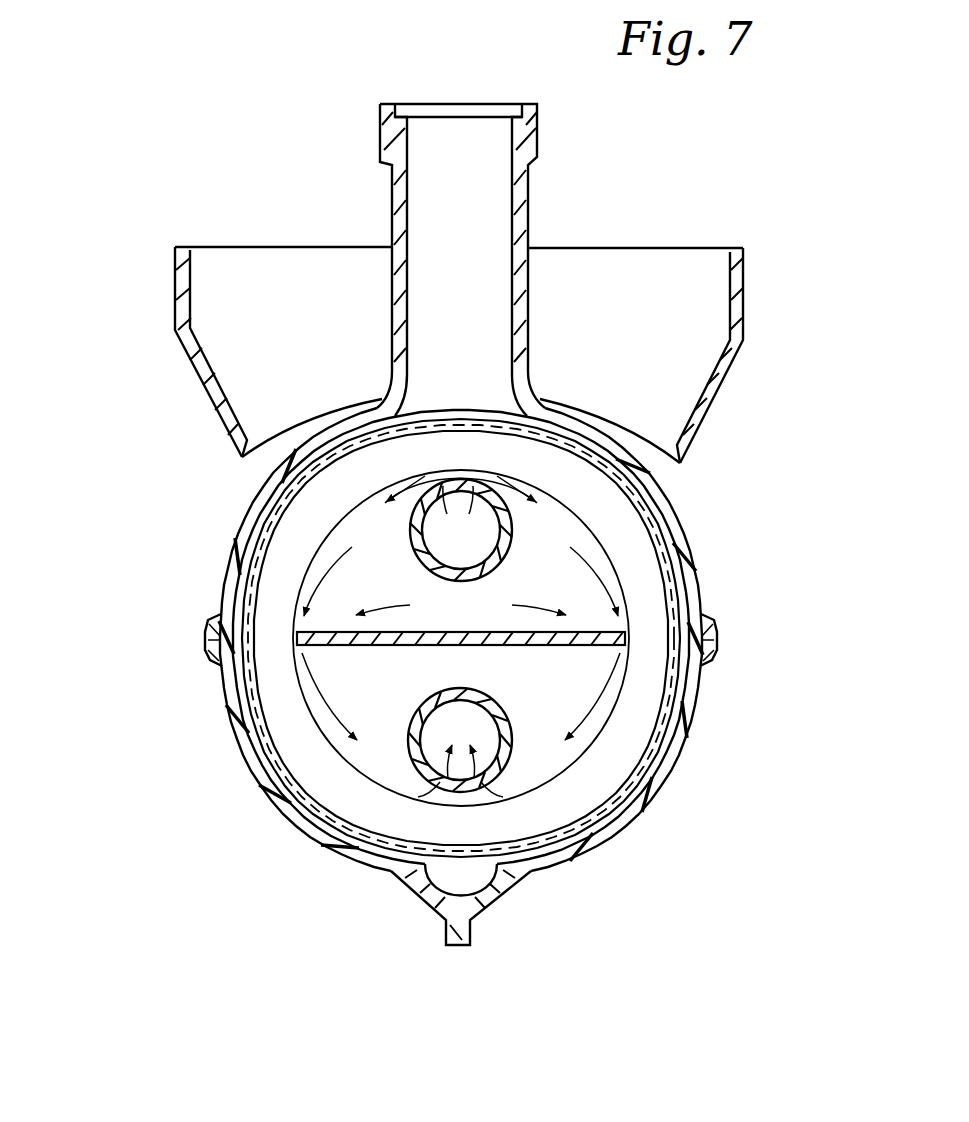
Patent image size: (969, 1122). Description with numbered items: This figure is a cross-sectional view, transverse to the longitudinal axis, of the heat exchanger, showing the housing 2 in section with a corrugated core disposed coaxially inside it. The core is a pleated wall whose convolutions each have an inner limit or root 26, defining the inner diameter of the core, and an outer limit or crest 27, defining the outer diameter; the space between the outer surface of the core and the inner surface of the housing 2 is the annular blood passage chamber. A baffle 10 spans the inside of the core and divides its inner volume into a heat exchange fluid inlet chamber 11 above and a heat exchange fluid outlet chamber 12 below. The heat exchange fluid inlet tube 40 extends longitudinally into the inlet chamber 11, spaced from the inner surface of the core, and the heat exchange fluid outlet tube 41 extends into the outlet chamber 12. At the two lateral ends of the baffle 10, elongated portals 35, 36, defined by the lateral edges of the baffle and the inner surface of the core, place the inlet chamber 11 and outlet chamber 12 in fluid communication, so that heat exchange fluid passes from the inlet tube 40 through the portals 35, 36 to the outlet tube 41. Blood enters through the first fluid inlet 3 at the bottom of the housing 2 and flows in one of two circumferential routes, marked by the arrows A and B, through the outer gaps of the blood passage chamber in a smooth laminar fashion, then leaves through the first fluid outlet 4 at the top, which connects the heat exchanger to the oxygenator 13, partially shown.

The housing 2 is at (218, 688).
The first fluid inlet 3 is at (416, 890).
The first fluid outlet 4 is at (380, 136).
The baffle 10 is at (521, 646).
The inlet chamber 11 is at (471, 618).
The outlet chamber 12 is at (471, 680).
The oxygenator 13 is at (172, 280).
The root 26 is at (603, 543).
The crest 27 is at (668, 565).
The elongated portal 35 is at (297, 637).
The elongated portal 36 is at (626, 633).
The heat exchange fluid inlet tube 40 is at (413, 547).
The heat exchange fluid outlet tube 41 is at (410, 717).